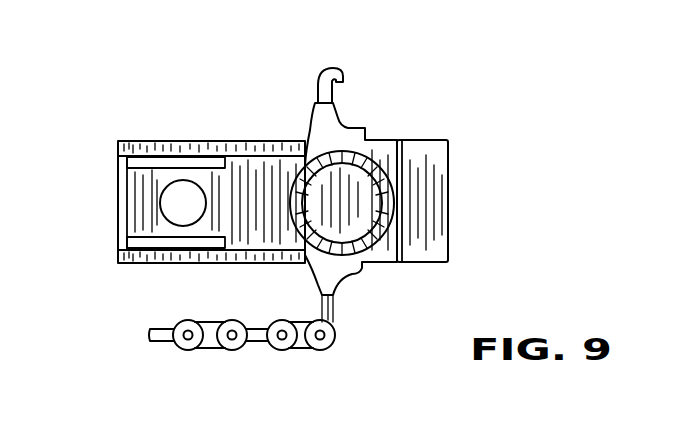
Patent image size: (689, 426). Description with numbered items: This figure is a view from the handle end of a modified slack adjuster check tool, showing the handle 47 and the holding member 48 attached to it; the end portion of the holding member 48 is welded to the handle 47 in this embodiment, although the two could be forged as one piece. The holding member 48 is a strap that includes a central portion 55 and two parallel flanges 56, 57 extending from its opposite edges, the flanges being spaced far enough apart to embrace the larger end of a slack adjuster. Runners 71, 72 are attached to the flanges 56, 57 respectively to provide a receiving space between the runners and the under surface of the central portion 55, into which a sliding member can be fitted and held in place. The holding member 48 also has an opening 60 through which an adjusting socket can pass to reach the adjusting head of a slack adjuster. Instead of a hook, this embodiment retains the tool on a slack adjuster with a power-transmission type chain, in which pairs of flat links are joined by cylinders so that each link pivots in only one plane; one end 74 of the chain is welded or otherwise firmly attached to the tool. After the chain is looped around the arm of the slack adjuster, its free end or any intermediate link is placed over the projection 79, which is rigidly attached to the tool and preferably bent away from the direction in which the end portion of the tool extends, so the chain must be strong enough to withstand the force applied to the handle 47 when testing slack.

The handle 47 is at (383, 152).
The holding member 48 is at (447, 200).
The central portion 55 is at (138, 207).
The flange 56 is at (273, 255).
The flange 57 is at (252, 148).
The opening 60 is at (182, 180).
The runner 71 is at (134, 246).
The runner 72 is at (136, 165).
The end of chain 74 is at (337, 342).
The projection 79 is at (348, 65).